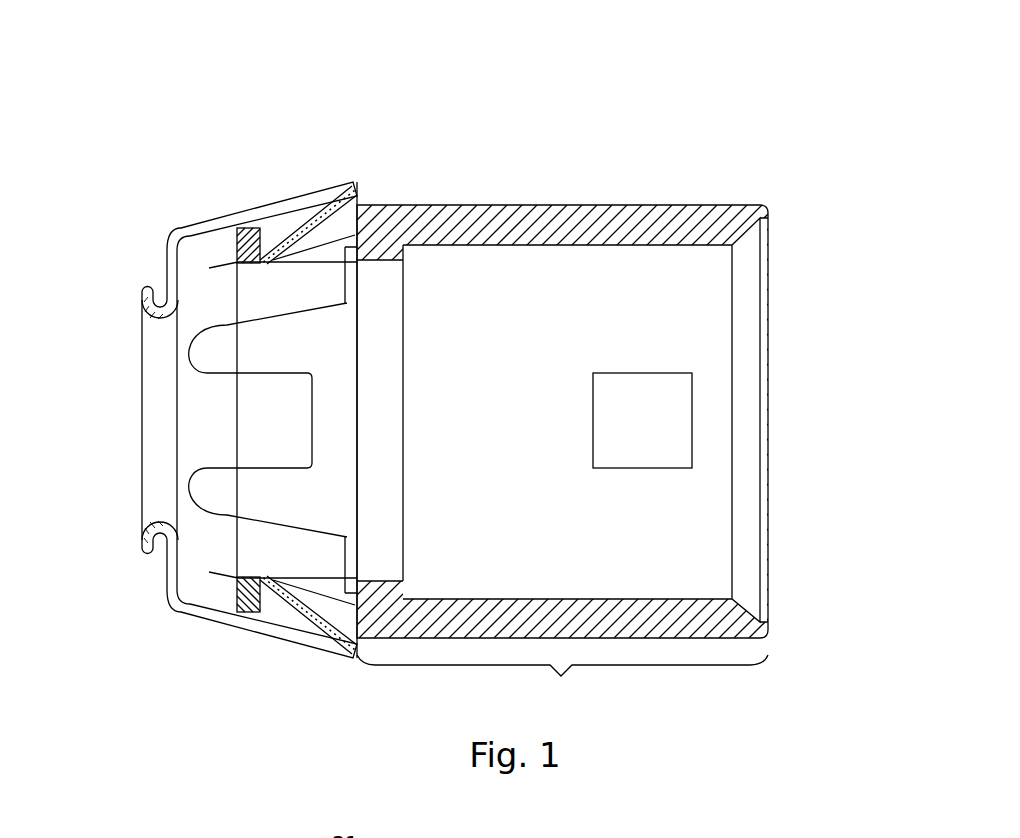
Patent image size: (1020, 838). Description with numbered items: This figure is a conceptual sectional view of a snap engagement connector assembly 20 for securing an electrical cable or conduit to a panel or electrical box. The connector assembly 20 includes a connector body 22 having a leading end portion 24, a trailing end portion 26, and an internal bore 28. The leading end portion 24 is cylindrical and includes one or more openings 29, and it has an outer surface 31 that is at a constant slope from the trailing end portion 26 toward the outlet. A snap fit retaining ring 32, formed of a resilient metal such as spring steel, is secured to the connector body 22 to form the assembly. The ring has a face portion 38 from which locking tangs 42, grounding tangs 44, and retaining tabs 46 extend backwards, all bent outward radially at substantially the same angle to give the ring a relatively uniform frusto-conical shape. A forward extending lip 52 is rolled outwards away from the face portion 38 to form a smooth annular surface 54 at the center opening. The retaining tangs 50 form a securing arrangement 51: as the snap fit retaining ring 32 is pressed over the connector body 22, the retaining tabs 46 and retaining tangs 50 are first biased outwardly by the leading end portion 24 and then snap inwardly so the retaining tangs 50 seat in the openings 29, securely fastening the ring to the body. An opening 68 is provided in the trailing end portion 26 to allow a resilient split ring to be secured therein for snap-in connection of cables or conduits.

The snap engagement connector assembly 20 is at (521, 113).
The connector body 22 is at (665, 203).
The leading end portion 24 is at (237, 418).
The trailing end portion 26 is at (562, 682).
The internal bore 28 is at (702, 300).
The openings 29 is at (330, 243).
The outer surface 31 is at (331, 625).
The snap fit retaining ring 32 is at (171, 242).
The face portion 38 is at (166, 272).
The locking tangs 42 is at (262, 431).
The grounding tangs 44 is at (294, 296).
The retaining tabs 46 is at (338, 185).
The retaining tangs 50 is at (280, 240).
The securing arrangement 51 is at (270, 174).
The forward extending lip 52 is at (141, 300).
The smooth annular surface 54 is at (159, 523).
The opening 68 is at (630, 431).